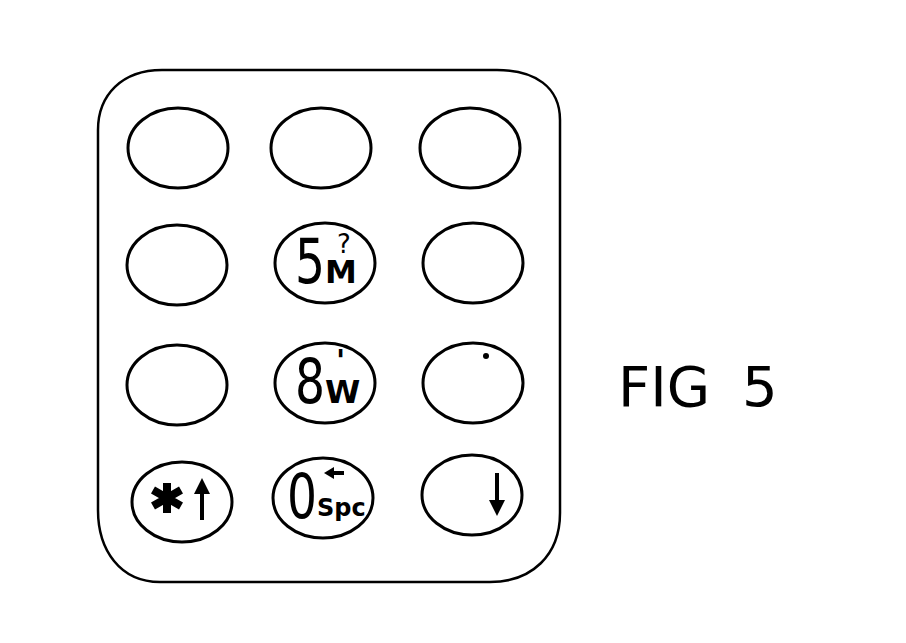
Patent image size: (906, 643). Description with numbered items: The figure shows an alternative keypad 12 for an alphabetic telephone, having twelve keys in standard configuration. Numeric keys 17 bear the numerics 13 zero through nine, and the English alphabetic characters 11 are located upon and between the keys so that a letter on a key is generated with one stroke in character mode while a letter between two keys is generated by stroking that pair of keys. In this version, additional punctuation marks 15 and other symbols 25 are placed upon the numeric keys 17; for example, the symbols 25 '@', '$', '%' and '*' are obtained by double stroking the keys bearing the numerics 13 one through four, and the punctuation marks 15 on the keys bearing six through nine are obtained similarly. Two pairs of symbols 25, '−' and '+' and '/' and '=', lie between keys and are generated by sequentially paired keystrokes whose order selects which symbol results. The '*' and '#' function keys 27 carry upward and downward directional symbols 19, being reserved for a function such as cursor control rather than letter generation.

The keypad 12 is at (537, 87).
The alphabetic characters 11 is at (482, 203).
The numerics 13 is at (157, 390).
The punctuation marks 15 is at (489, 243).
The numeric keys 17 is at (137, 172).
The directional symbols 19 is at (508, 490).
The symbols 25 is at (465, 113).
The function keys 27 is at (130, 502).